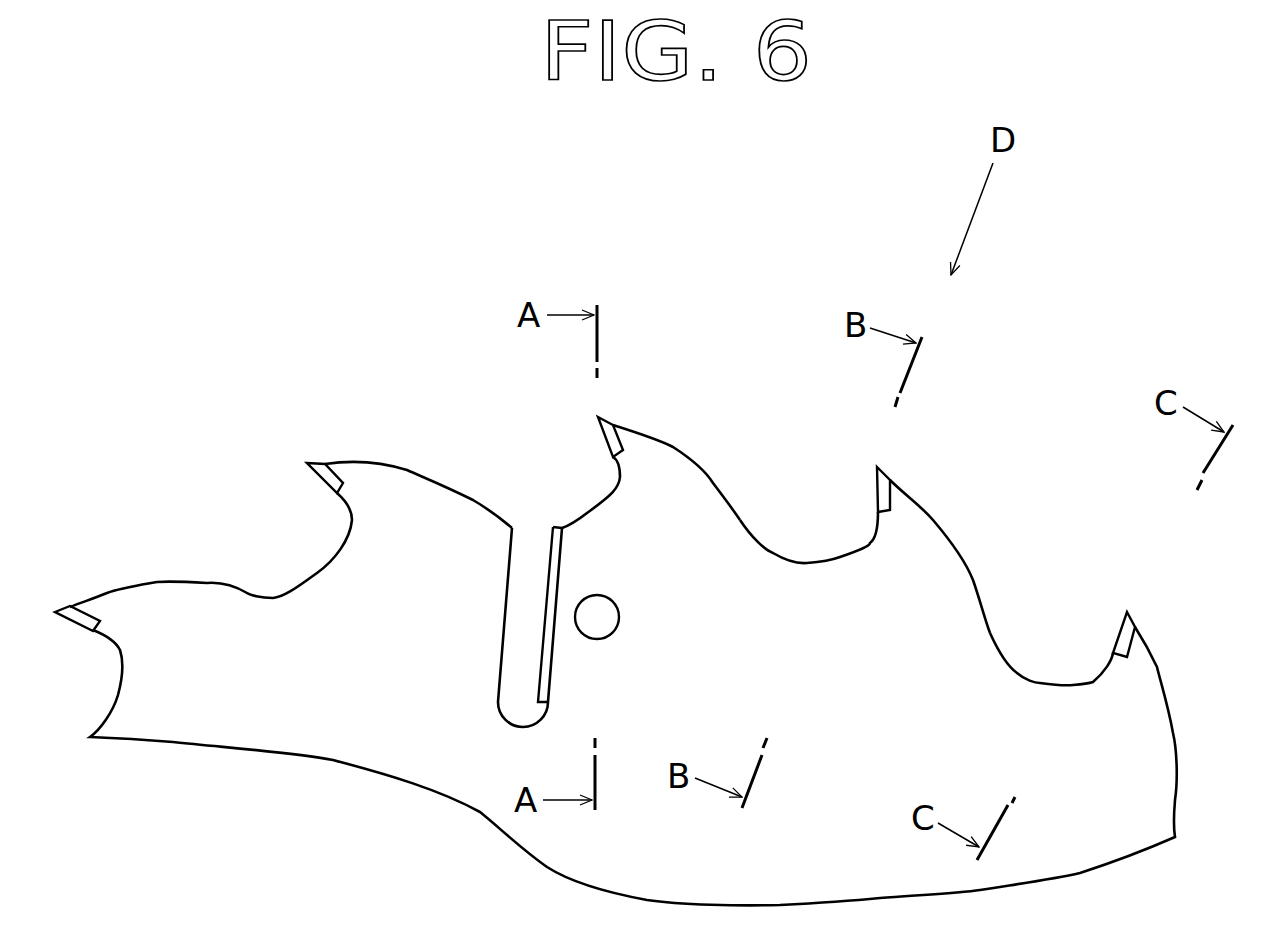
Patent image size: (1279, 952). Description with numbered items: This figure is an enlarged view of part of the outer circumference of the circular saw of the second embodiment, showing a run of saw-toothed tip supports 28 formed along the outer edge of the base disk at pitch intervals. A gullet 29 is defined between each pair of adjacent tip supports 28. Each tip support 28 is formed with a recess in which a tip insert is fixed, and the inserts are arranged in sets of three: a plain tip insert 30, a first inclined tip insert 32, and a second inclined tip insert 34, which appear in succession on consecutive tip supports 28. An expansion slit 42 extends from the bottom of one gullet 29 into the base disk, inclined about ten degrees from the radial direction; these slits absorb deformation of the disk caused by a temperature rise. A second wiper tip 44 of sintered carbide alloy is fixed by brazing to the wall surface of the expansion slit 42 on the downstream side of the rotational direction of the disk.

The tip support 28 is at (673, 473).
The gullet 29 is at (587, 510).
The plain tip insert 30 is at (610, 420).
The first inclined tip insert 32 is at (882, 467).
The second inclined tip insert 34 is at (1132, 620).
The expansion slit 42 is at (512, 698).
The second wiper tip 44 is at (543, 608).